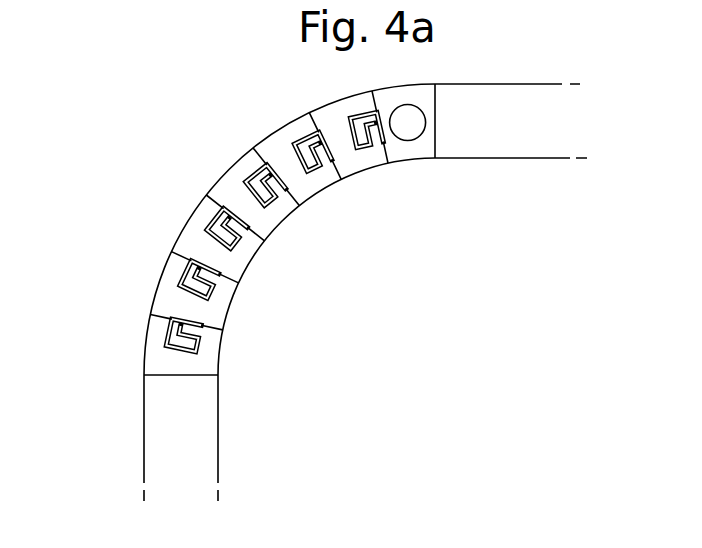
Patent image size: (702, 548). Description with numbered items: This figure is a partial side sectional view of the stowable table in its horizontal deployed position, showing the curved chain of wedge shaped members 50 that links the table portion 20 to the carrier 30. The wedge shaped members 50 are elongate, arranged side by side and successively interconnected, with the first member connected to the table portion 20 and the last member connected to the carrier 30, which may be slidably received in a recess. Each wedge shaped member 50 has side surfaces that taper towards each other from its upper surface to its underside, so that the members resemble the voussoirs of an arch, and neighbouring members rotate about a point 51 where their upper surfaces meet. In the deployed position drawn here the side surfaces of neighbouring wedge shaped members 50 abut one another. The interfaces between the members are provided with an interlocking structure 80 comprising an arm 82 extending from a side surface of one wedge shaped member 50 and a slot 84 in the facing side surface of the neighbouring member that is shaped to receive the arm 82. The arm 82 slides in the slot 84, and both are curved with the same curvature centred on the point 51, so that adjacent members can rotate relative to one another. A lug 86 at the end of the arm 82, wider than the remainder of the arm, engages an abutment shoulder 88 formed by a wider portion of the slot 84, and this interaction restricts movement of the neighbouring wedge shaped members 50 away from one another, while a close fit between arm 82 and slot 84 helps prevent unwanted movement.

The table portion 20 is at (522, 136).
The carrier 30 is at (190, 433).
The wedge shaped member 50 is at (248, 229).
The point 51 is at (207, 193).
The interlocking structure 80 is at (151, 327).
The arm 82 is at (251, 190).
The slot 84 is at (277, 203).
The lug 86 is at (179, 228).
The abutment shoulder 88 is at (222, 220).